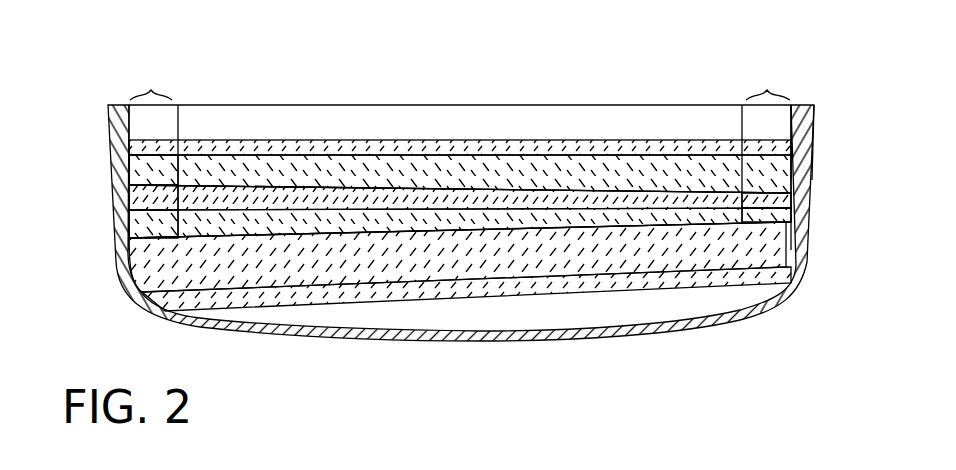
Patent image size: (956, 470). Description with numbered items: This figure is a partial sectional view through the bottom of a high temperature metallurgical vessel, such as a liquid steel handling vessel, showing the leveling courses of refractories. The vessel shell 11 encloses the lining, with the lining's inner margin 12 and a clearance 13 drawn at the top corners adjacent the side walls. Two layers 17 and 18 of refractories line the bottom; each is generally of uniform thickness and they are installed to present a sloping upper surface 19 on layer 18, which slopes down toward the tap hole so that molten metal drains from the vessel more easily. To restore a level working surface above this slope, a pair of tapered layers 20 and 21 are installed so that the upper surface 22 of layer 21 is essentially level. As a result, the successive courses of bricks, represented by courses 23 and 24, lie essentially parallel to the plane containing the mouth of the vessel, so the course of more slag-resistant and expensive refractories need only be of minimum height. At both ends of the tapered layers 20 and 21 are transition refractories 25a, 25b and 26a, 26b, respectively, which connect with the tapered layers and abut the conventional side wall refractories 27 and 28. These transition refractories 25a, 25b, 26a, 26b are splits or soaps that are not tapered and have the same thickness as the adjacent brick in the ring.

The container wall 11 is at (111, 104).
The inner wall surface 12 is at (125, 102).
The gap between wall and layer stack 13 is at (160, 90).
The refractory layer 17 is at (427, 293).
The refractory layer 18 is at (322, 272).
The sloping upper surface 19 is at (308, 232).
The tapered layer 20 is at (433, 220).
The tapered layer 21 is at (527, 197).
The upper surface of tapered layer 22 is at (587, 190).
The course of bricks 23 is at (235, 167).
The course of bricks 24 is at (398, 140).
The transition refractory 25a is at (153, 198).
The transition refractory 25b is at (163, 230).
The transition refractory 26a is at (790, 200).
The transition refractory 26b is at (795, 222).
The side wall refractories 27 is at (148, 172).
The side wall refractories 28 is at (805, 172).